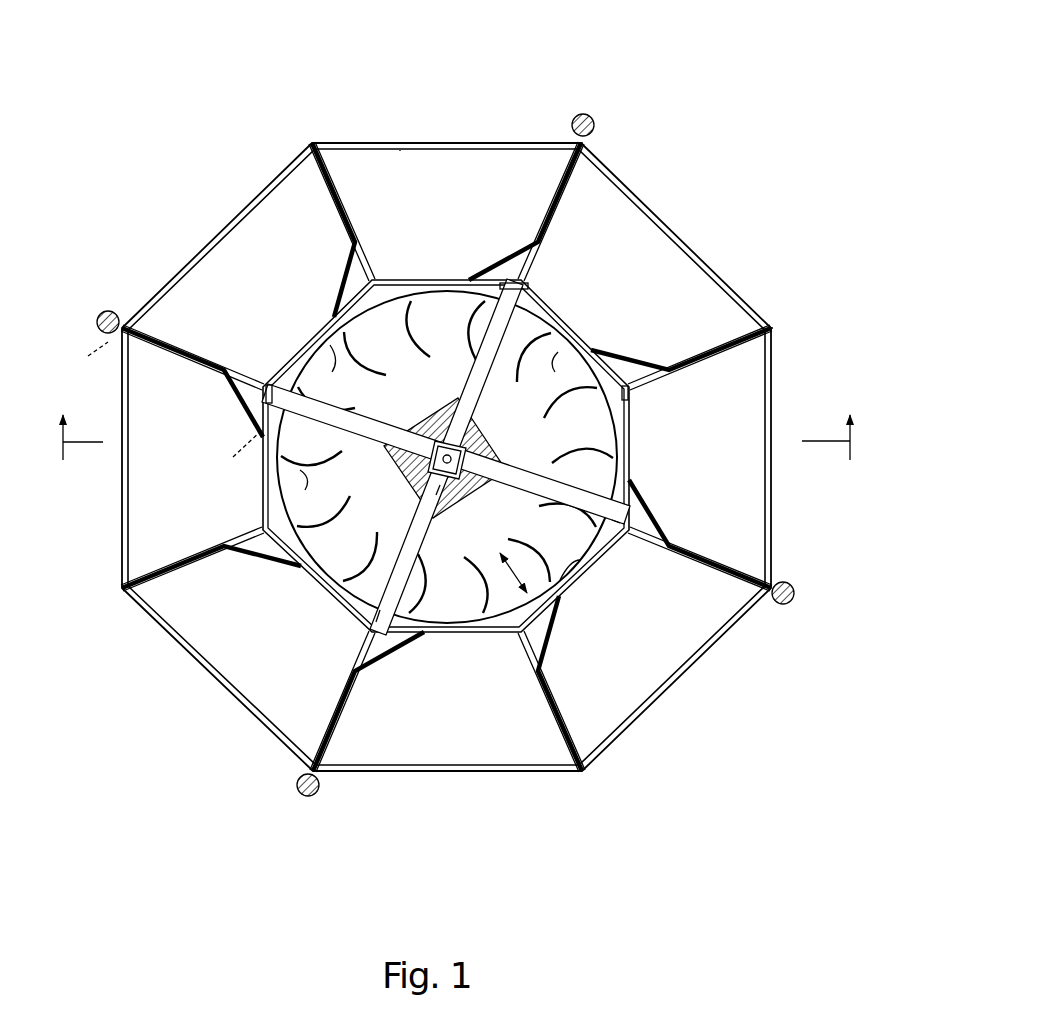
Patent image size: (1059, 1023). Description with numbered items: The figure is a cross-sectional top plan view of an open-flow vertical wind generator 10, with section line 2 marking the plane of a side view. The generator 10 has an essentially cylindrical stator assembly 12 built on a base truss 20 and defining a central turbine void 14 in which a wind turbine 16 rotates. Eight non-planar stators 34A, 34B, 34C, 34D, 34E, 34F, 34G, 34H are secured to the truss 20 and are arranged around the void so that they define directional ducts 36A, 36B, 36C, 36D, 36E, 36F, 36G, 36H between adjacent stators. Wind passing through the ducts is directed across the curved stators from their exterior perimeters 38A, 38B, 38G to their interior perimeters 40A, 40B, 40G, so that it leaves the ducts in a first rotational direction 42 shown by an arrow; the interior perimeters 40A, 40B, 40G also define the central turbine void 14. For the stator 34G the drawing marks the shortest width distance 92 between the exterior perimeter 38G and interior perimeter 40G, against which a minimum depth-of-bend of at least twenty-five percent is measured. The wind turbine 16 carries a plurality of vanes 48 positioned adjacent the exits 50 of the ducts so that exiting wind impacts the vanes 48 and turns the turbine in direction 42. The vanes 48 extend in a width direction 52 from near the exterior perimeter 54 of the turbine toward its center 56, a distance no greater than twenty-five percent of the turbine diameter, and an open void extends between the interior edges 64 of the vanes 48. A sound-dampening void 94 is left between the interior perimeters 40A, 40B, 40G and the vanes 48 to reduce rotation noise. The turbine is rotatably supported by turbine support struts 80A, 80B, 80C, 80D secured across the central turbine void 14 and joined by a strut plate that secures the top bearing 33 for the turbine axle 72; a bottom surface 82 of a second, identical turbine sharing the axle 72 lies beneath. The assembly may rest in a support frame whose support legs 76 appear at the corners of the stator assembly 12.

The open-flow vertical wind generator 10 is at (722, 80).
The stator assembly 12 is at (781, 436).
The central turbine void 14 is at (376, 298).
The wind turbine 16 is at (452, 302).
The base truss 20 is at (654, 253).
The section line 2 is at (456, 437).
The top bearing 33 is at (490, 446).
The non-planar stator 34A is at (498, 252).
The non-planar stator 34B is at (633, 357).
The non-planar stator 34C is at (662, 537).
The non-planar stator 34D is at (550, 607).
The non-planar stator 34E is at (345, 700).
The non-planar stator 34F is at (265, 560).
The non-planar stator 34G is at (197, 355).
The non-planar stator 34H is at (333, 178).
The directional duct 36A is at (396, 184).
The directional duct 36B is at (600, 222).
The directional duct 36C is at (735, 405).
The directional duct 36D is at (688, 622).
The directional duct 36E is at (403, 732).
The directional duct 36F is at (222, 614).
The directional duct 36G is at (178, 510).
The directional duct 36H is at (272, 230).
The exterior perimeter 38A is at (592, 148).
The exterior perimeter 38B is at (775, 330).
The exterior perimeter 38G is at (115, 345).
The interior perimeter 40A is at (540, 284).
The interior perimeter 40B is at (632, 392).
The interior perimeter 40G is at (267, 384).
The first rotational direction 42 is at (485, 536).
The vanes 48 is at (392, 352).
The exits 50 is at (427, 268).
The width direction 52 is at (506, 573).
The exterior perimeter 54 is at (548, 575).
The center 56 is at (442, 400).
The interior edges 64 is at (345, 382).
The turbine axle 72 is at (430, 425).
The support legs 76 is at (593, 117).
The turbine support strut 80A is at (472, 365).
The turbine support strut 80B is at (535, 484).
The turbine support strut 80C is at (395, 540).
The turbine support strut 80D is at (345, 446).
The bottom surface 82 is at (395, 500).
The width distance 92 is at (236, 440).
The sound-dampening void 94 is at (513, 625).